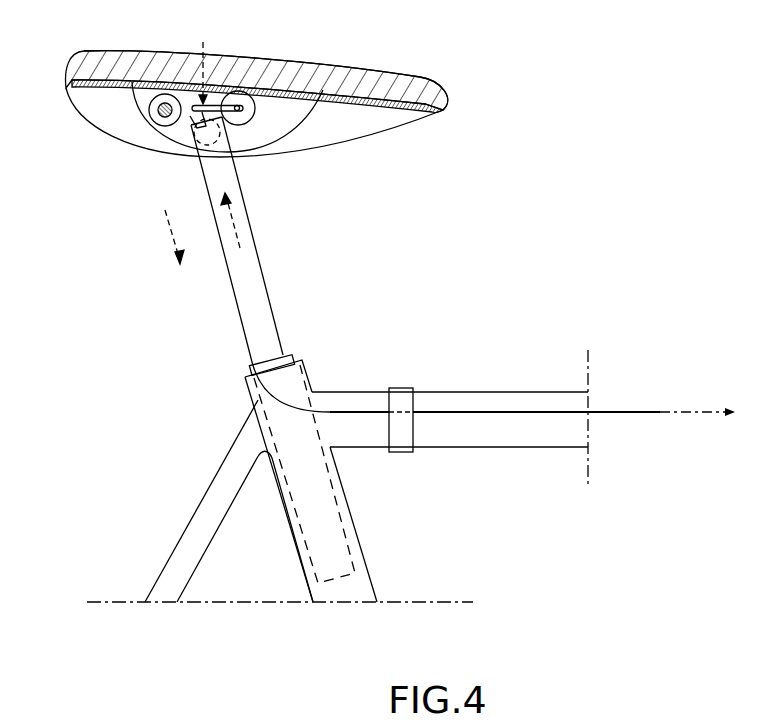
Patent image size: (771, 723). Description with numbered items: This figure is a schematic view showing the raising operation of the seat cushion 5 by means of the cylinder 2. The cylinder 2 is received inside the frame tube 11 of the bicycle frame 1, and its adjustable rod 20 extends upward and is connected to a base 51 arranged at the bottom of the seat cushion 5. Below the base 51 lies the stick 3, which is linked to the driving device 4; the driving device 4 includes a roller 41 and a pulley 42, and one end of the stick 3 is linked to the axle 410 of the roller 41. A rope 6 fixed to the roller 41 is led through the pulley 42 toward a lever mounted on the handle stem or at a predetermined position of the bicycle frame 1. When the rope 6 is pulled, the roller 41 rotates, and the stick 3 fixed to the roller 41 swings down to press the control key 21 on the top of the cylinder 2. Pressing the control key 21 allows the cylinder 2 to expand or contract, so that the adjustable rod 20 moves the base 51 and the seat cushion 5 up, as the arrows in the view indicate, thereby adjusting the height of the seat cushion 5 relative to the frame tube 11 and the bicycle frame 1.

The bicycle frame 1 is at (483, 392).
The cylinder 2 is at (318, 480).
The stick 3 is at (235, 115).
The driving device 4 is at (123, 125).
The seat cushion 5 is at (427, 77).
The rope 6 is at (615, 412).
The frame tube 11 is at (358, 535).
The adjustable rod 20 is at (258, 252).
The control key 21 is at (192, 127).
The roller 41 is at (268, 70).
The pulley 42 is at (163, 98).
The base 51 is at (403, 100).
The axle 410 is at (245, 110).